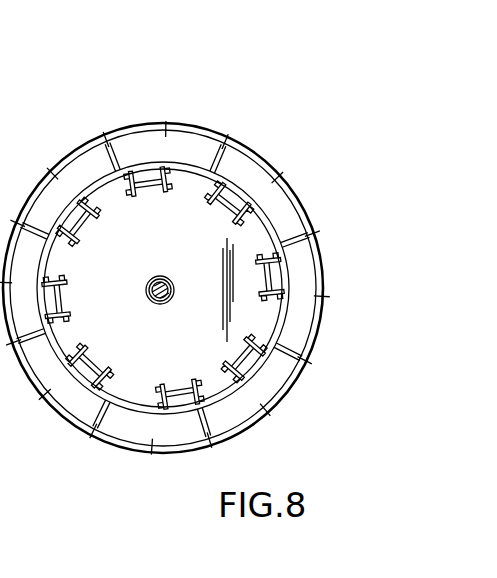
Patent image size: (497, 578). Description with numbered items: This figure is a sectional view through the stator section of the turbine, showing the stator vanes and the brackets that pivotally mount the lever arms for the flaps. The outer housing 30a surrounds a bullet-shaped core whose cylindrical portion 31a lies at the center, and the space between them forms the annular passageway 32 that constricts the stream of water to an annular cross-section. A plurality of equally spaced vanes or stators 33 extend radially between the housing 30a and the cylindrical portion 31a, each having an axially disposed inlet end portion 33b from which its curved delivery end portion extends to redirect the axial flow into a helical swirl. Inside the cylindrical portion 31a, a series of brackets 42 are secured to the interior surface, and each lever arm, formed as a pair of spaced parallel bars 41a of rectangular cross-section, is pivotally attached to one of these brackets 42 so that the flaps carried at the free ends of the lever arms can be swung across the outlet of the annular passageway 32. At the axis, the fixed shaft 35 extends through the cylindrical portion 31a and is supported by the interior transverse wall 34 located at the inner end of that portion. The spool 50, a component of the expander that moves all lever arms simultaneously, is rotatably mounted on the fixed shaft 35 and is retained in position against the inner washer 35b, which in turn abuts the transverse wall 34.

The housing 30a is at (191, 288).
The cylindrical portion 31a is at (194, 285).
The annular passageway 32 is at (186, 288).
The stator 33 is at (186, 289).
The inlet end portion 33b is at (260, 147).
The interior transverse wall 34 is at (209, 290).
The fixed shaft 35 is at (180, 279).
The inner washer 35b is at (132, 278).
The parallel bars 41a is at (162, 288).
The bracket 42 is at (163, 288).
The spool 50 is at (157, 262).